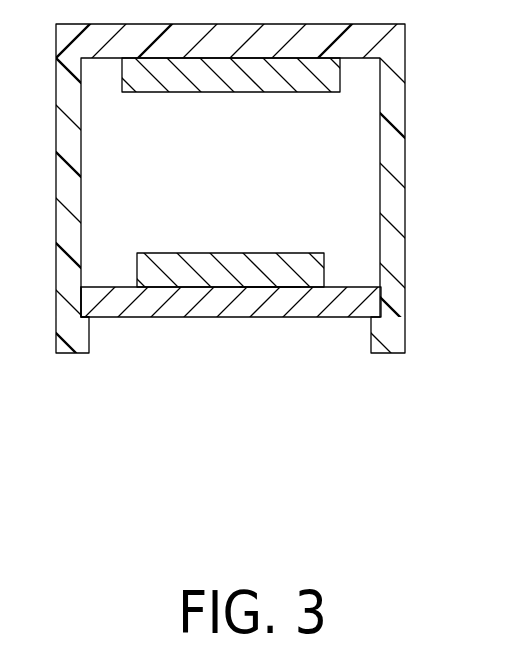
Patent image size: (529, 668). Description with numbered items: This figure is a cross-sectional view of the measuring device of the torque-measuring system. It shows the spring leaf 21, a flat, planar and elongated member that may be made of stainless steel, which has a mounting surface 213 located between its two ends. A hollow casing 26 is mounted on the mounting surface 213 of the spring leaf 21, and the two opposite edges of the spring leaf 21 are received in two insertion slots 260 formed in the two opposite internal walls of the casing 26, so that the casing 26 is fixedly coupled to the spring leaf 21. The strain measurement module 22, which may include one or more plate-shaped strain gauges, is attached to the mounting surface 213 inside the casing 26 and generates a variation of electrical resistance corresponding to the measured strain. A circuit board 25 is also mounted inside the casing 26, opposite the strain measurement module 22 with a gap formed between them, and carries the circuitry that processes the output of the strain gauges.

The casing 26 is at (393, 152).
The insertion slot 260 is at (80, 302).
The circuit board 25 is at (235, 78).
The strain measurement module 22 is at (201, 273).
The spring leaf 21 is at (213, 303).
The mounting surface 213 is at (248, 285).